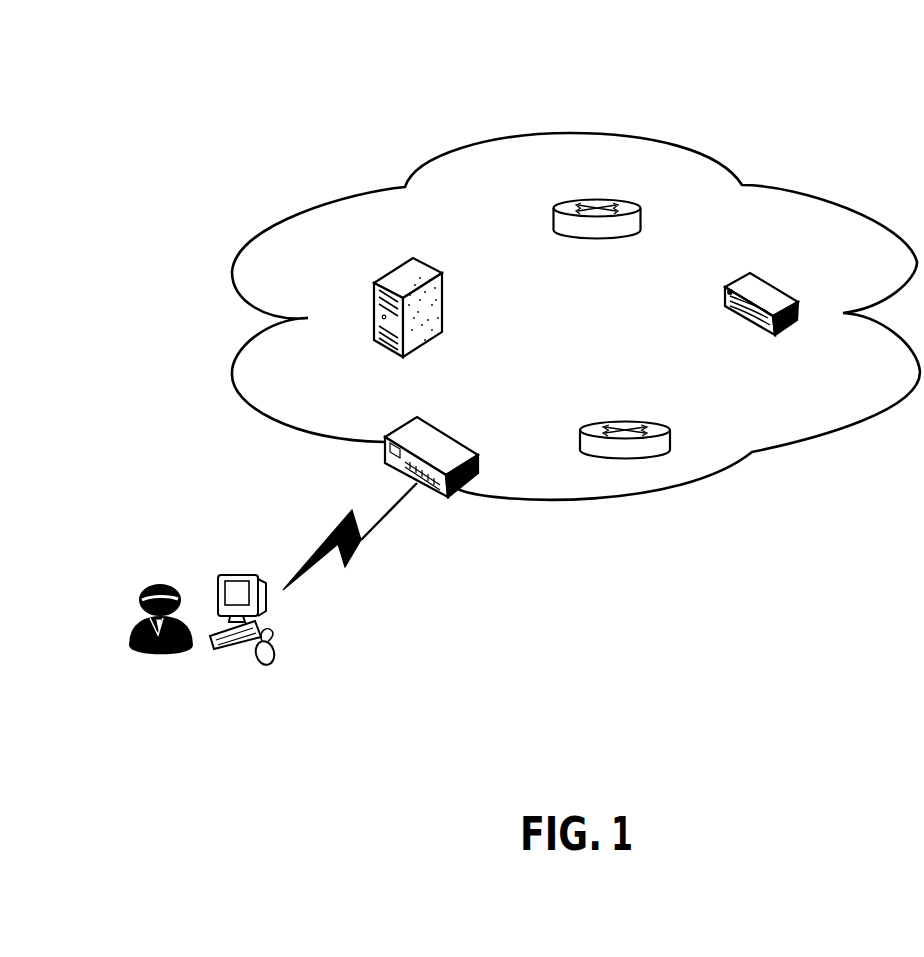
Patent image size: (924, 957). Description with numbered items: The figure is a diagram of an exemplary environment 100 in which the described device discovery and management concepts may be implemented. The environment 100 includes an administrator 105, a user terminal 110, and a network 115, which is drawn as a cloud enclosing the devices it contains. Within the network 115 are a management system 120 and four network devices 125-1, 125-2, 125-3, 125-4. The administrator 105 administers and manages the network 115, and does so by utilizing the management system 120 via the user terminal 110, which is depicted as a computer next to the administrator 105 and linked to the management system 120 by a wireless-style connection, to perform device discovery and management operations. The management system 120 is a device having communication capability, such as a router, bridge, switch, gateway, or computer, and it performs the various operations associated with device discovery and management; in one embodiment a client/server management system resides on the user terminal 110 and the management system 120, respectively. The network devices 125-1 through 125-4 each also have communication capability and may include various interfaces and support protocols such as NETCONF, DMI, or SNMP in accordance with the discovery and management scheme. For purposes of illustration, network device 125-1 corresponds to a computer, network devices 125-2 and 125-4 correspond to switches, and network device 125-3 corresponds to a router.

The environment 100 is at (210, 103).
The administrator 105 is at (137, 647).
The user terminal 110 is at (239, 575).
The network 115 is at (576, 316).
The management system 120 is at (430, 427).
The network device 125-1 is at (376, 287).
The network device 125-2 is at (597, 200).
The network device 125-3 is at (765, 280).
The network device 125-4 is at (633, 422).